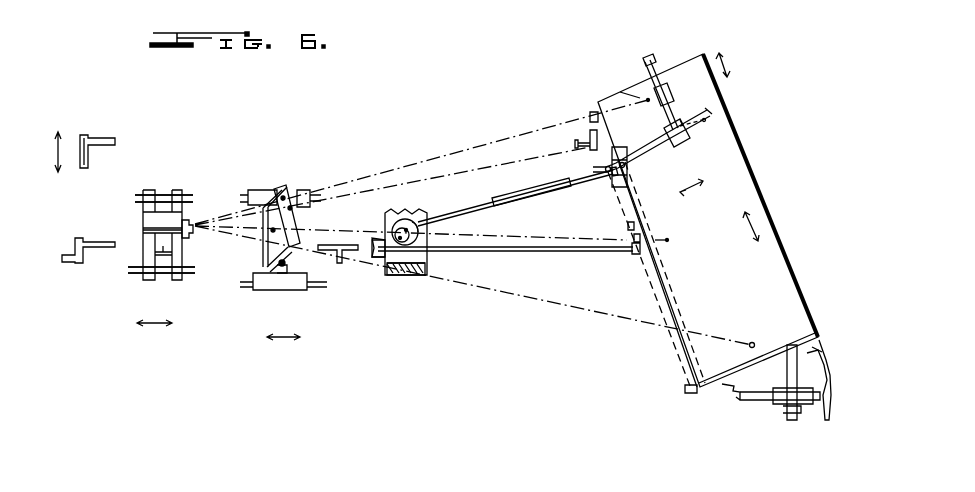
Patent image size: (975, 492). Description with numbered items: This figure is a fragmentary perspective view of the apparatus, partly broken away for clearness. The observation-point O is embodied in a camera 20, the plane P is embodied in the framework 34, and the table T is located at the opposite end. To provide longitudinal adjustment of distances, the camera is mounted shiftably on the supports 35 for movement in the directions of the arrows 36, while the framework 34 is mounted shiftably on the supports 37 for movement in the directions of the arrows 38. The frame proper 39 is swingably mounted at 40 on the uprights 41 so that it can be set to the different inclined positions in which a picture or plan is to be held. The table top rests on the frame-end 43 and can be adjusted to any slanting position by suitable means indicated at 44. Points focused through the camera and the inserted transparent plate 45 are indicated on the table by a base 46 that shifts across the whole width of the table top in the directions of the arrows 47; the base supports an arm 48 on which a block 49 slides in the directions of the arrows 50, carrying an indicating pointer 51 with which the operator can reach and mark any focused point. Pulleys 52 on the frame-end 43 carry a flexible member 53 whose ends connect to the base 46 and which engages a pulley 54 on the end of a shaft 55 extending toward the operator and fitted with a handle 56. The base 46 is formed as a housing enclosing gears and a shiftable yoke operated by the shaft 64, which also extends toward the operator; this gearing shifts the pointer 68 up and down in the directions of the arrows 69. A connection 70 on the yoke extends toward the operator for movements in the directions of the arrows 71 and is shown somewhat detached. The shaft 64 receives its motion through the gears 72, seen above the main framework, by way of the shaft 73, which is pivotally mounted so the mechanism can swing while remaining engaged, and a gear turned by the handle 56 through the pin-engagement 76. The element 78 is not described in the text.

The observation-point O is at (196, 222).
The plane P is at (303, 126).
The table T is at (765, 186).
The camera 20 is at (140, 220).
The framework 34 is at (292, 184).
The supports 35 is at (163, 191).
The arrows 36 is at (150, 327).
The supports 37 is at (246, 191).
The arrows 38 is at (285, 341).
The frame proper 39 is at (262, 260).
The swing mounting 40 is at (281, 194).
The uprights 41 is at (281, 289).
The frame-end 43 is at (745, 400).
The adjusting means 44 is at (792, 421).
The transparent plate 45 is at (297, 216).
The base 46 is at (628, 170).
The arrows 47 is at (748, 230).
The arm 48 is at (714, 113).
The block 49 is at (679, 147).
The arrows 50 is at (697, 187).
The indicating pointer 51 is at (690, 140).
The pulleys 52 is at (590, 116).
The flexible member 53 is at (676, 352).
The pulley 54 is at (636, 256).
The shaft 55 is at (598, 253).
The handle 56 is at (70, 266).
The shaft 64 is at (591, 183).
The pointer 68 is at (666, 92).
The arrows 69 is at (730, 64).
The connection 70 is at (107, 137).
The arrows 71 is at (60, 134).
The gears 72 is at (392, 223).
The shaft 73 is at (412, 277).
The pin-engagement 76 is at (342, 264).
The tab 78 is at (387, 264).